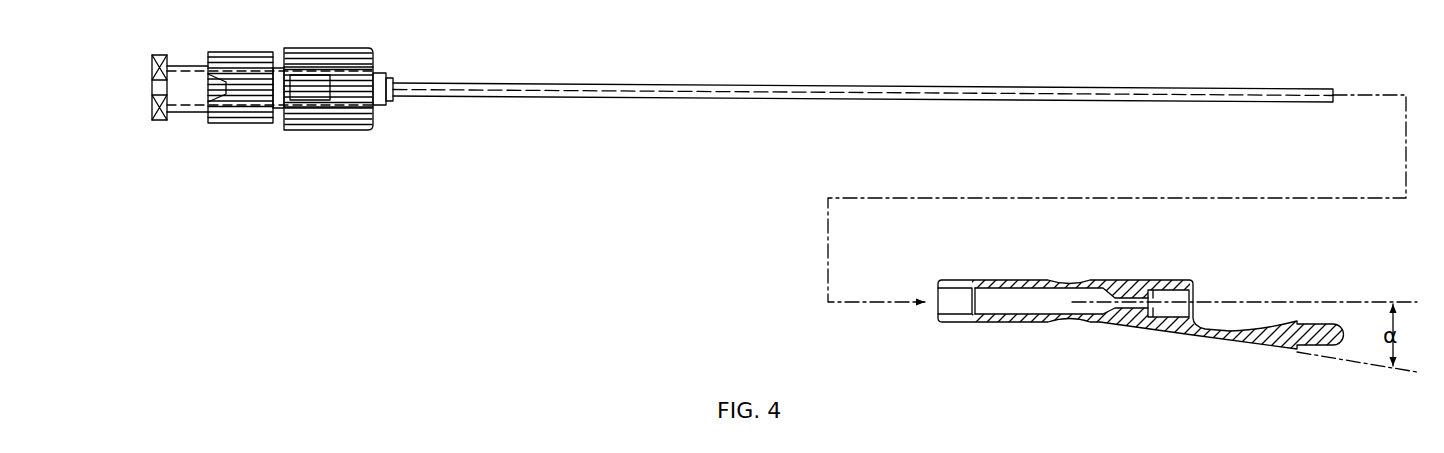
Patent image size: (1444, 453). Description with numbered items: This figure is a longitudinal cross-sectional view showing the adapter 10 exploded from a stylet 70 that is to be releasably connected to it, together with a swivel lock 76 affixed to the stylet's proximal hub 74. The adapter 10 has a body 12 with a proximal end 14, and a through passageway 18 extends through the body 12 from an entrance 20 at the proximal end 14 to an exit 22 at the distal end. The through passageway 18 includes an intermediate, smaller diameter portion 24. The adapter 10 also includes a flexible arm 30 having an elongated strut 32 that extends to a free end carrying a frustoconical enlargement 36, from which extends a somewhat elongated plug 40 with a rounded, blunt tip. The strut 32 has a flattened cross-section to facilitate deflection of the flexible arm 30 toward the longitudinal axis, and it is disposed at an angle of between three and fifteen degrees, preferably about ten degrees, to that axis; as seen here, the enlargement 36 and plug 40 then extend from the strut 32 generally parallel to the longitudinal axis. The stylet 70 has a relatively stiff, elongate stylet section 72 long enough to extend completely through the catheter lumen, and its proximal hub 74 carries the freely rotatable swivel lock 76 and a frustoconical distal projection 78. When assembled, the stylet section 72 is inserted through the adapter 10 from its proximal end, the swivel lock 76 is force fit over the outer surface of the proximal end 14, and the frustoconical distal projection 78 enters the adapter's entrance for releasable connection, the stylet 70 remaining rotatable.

The adapter 10 is at (1056, 324).
The body 12 is at (1108, 328).
The proximal end 14 is at (963, 275).
The through passageway 18 is at (1063, 298).
The entrance 20 is at (947, 308).
The exit 22 is at (1175, 305).
The intermediate smaller diameter portion 24 is at (1020, 303).
The flexible arm 30 is at (1238, 319).
The strut 32 is at (1188, 343).
The frustoconical enlargement 36 is at (1280, 351).
The plug 40 is at (1330, 318).
The stylet 70 is at (474, 101).
The stylet section 72 is at (570, 91).
The proximal hub 74 is at (236, 126).
The swivel lock 76 is at (367, 134).
The frustoconical distal projection 78 is at (323, 113).